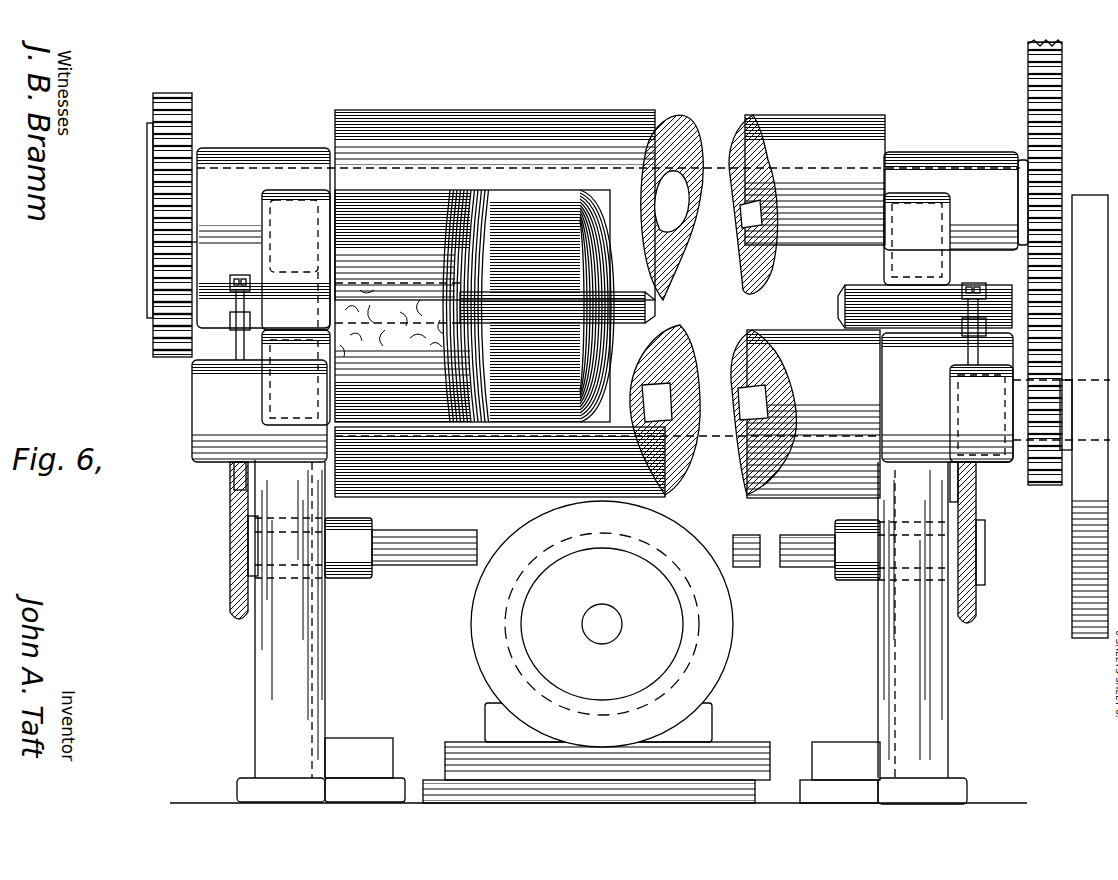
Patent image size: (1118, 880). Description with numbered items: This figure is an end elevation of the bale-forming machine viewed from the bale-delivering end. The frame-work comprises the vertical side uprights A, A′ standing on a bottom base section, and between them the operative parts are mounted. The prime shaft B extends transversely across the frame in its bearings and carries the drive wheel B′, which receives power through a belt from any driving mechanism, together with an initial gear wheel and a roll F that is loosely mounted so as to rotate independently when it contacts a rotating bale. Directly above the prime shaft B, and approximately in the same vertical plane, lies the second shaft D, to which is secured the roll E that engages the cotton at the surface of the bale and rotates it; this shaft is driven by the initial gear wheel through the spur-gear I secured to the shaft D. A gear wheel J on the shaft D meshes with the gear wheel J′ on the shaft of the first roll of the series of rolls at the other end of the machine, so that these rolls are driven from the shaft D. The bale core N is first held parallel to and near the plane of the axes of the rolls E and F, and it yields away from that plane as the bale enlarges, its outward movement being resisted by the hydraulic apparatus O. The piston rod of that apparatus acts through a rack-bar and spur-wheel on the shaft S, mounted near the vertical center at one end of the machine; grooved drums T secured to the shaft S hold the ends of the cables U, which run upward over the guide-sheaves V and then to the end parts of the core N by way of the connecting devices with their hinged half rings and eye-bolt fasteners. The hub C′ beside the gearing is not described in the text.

The gear wheel J is at (185, 108).
The gear wheel J′ is at (142, 337).
The roll E is at (540, 112).
The spur-gear I is at (1032, 72).
The second shaft D is at (658, 222).
The bale core N is at (660, 300).
The prime shaft B is at (688, 398).
The roll F is at (510, 478).
The shaft S is at (455, 552).
The side upright A′ is at (306, 631).
The side upright A is at (900, 633).
The hydraulic apparatus O is at (586, 624).
The cable or rope U is at (232, 478).
The grooved wheel or drum T is at (228, 505).
The guide-sheave or pulley V is at (975, 506).
The gear hub C′ is at (1052, 448).
The drive wheel B′ is at (1064, 416).